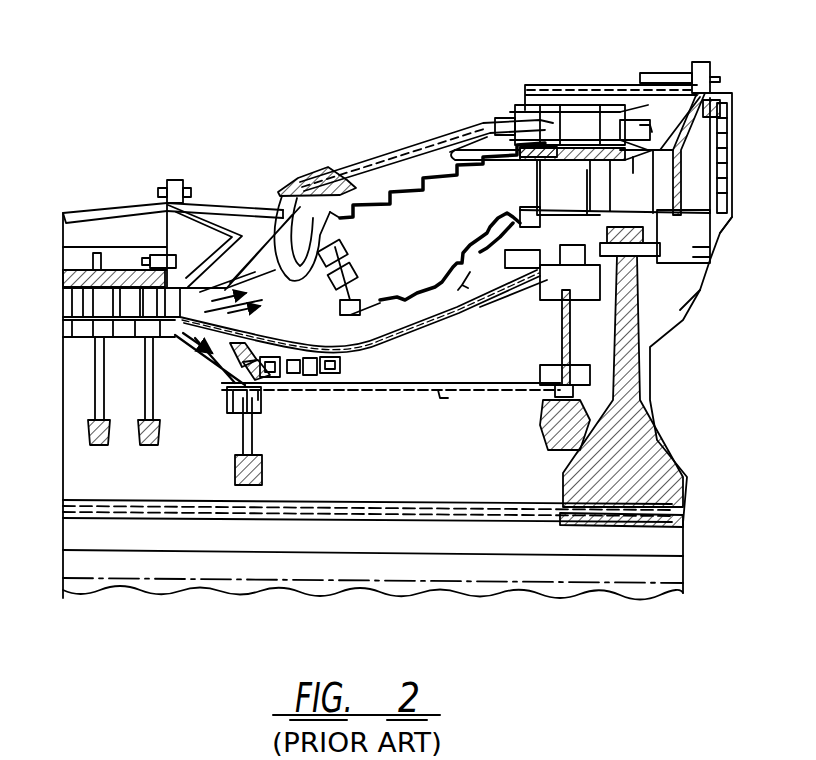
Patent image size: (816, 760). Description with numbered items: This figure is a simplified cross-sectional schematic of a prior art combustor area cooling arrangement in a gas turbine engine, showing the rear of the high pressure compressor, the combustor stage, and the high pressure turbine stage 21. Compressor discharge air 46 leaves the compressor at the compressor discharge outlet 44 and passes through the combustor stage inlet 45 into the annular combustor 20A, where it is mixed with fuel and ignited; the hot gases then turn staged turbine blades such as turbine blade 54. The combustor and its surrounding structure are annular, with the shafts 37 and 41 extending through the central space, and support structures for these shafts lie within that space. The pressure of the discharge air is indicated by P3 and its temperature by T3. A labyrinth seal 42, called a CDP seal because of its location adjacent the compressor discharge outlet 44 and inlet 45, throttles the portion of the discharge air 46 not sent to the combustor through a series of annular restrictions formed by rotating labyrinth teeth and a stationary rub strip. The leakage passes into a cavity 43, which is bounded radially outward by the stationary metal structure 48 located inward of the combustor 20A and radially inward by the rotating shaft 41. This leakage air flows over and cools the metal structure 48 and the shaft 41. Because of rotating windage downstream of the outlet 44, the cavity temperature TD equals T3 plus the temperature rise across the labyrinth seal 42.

The high pressure turbine stage 21 is at (603, 110).
The turbine blade 54 is at (650, 125).
The combustor 20A is at (437, 238).
The combustor stage inlet 45 is at (241, 292).
The compressor discharge outlet 44 is at (124, 391).
The compressor discharge air 46 is at (192, 356).
The pressure of the discharge air P3 is at (228, 362).
The temperature of the discharge air T3 is at (227, 392).
The labyrinth seal 42 is at (277, 382).
The metal structure 48 is at (385, 343).
The cavity 43 is at (500, 352).
The temperature in cavity TD is at (462, 376).
The shaft 41 is at (545, 392).
The shaft 37 is at (440, 500).